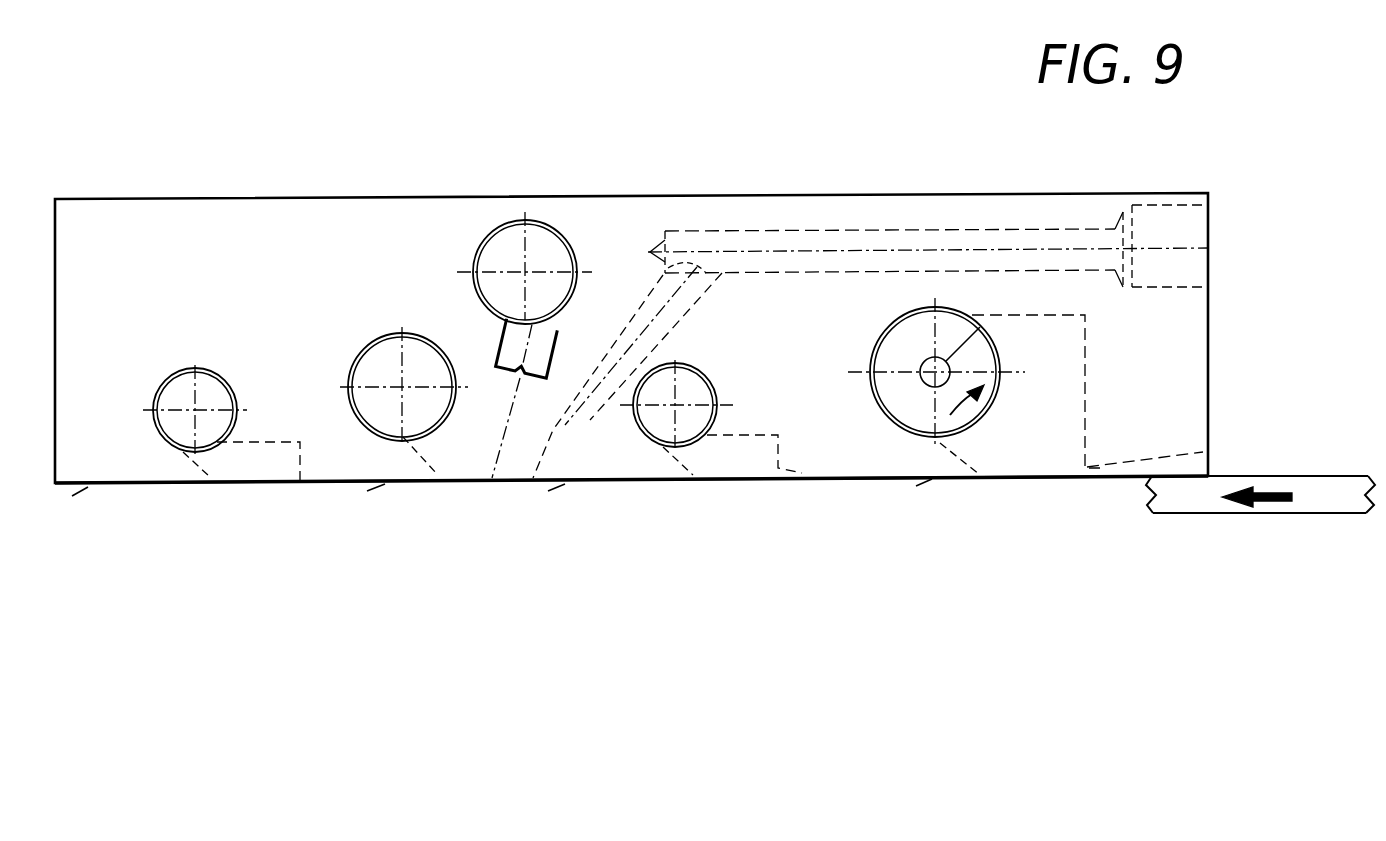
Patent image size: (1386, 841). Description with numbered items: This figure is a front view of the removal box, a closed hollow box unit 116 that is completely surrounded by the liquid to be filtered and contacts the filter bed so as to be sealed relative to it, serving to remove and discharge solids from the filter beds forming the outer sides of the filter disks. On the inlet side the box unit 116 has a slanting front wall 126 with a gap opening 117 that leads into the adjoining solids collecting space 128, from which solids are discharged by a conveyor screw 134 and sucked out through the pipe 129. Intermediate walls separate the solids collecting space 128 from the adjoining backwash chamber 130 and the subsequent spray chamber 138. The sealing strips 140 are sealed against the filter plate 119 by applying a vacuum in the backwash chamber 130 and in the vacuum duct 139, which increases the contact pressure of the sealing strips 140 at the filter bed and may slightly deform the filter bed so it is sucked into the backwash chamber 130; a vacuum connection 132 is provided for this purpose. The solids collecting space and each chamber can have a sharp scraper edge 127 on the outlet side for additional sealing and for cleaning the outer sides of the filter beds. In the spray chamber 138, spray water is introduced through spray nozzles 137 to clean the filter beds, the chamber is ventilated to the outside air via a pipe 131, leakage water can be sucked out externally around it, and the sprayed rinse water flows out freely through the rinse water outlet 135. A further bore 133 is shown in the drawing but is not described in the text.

The box unit 116 is at (227, 265).
The inlet gap 117 is at (1092, 478).
The filter plate 119 is at (1313, 495).
The slanting front wall 126 is at (1158, 457).
The scraper edge 127 is at (205, 475).
The solids collecting space 128 is at (1034, 460).
The pipe 129 is at (920, 417).
The backwash chamber 130 is at (737, 462).
The pipe 131 is at (1197, 273).
The vacuum connection 132 is at (177, 427).
The bore 133 is at (540, 248).
The conveyor screw 134 is at (898, 388).
The rinse water outlet 135 is at (387, 413).
The spray nozzles 137 is at (570, 332).
The spray chamber 138 is at (487, 457).
The vacuum duct 139 is at (260, 468).
The sealing strips 140 is at (84, 488).